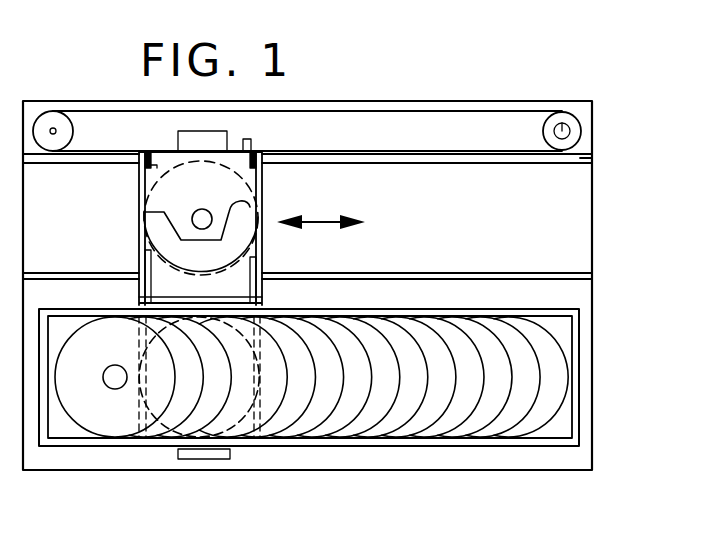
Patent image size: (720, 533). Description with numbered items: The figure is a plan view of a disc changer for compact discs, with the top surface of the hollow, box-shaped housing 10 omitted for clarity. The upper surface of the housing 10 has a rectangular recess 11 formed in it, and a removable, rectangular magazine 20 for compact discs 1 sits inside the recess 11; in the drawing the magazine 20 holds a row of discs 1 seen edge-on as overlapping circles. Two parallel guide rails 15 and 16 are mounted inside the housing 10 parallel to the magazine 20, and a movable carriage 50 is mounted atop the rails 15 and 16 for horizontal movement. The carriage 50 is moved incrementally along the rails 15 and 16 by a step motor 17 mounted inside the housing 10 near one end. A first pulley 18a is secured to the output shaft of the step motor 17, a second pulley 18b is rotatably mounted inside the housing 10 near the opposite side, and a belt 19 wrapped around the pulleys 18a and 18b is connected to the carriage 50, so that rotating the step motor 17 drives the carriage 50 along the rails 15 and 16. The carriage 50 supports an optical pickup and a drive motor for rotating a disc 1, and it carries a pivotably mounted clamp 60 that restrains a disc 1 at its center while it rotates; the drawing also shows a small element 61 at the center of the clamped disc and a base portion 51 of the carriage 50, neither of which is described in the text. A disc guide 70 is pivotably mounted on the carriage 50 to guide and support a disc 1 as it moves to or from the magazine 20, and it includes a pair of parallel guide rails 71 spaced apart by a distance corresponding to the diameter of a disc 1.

The compact disc 1 is at (244, 233).
The housing 10 is at (580, 233).
The rectangular recess 11 is at (580, 405).
The guide rail 15 is at (585, 157).
The guide rail 16 is at (566, 273).
The step motor 17 is at (562, 131).
The first pulley 18a is at (582, 128).
The second pulley 18b is at (40, 113).
The belt 19 is at (407, 109).
The magazine 20 is at (560, 333).
The carriage 50 is at (167, 284).
The carriage base 51 is at (158, 295).
The clamp 60 is at (252, 207).
The spindle 61 is at (199, 209).
The disc guide 70 is at (139, 262).
The guide rails 71 is at (256, 262).